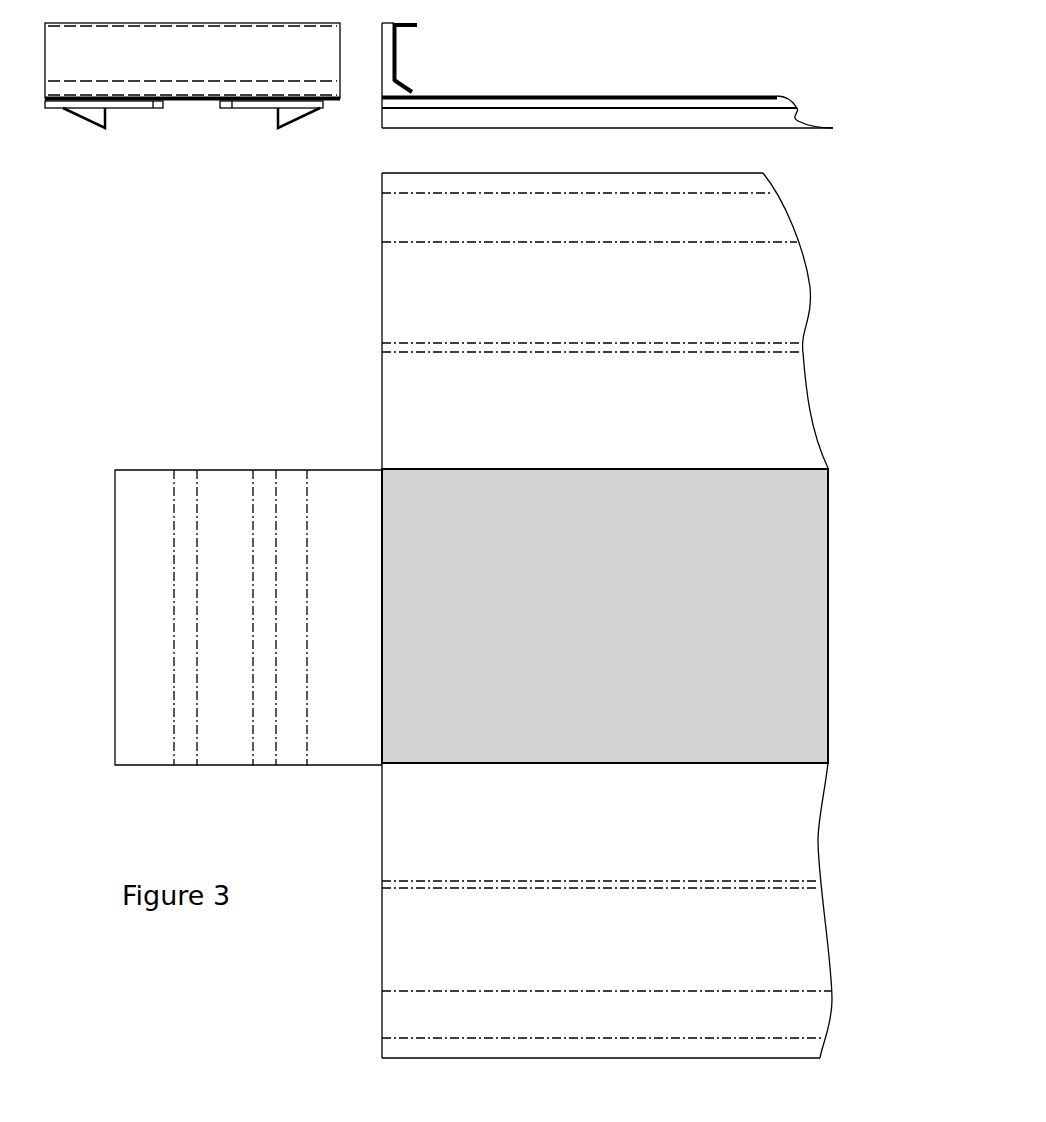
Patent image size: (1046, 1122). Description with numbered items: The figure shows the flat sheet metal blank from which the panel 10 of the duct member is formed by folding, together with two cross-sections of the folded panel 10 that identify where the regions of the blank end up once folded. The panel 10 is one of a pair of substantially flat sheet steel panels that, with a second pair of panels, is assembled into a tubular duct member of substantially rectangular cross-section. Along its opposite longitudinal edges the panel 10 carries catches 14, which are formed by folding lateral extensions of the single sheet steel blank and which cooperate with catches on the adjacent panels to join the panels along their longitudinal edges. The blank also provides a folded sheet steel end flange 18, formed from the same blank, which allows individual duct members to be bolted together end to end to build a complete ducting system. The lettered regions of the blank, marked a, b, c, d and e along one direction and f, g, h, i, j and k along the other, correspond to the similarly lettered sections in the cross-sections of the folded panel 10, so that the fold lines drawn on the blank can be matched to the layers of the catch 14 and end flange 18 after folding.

The panel 10 is at (195, 92).
The catch 14 is at (95, 138).
The end flange 18 is at (320, 47).
The lettered region a is at (398, 395).
The lettered region b is at (392, 348).
The lettered region c is at (407, 287).
The lettered region d is at (408, 219).
The lettered region e is at (398, 181).
The lettered region f is at (333, 747).
The lettered region g is at (288, 752).
The lettered region h is at (262, 752).
The lettered region i is at (214, 743).
The lettered region j is at (183, 753).
The lettered region k is at (153, 743).